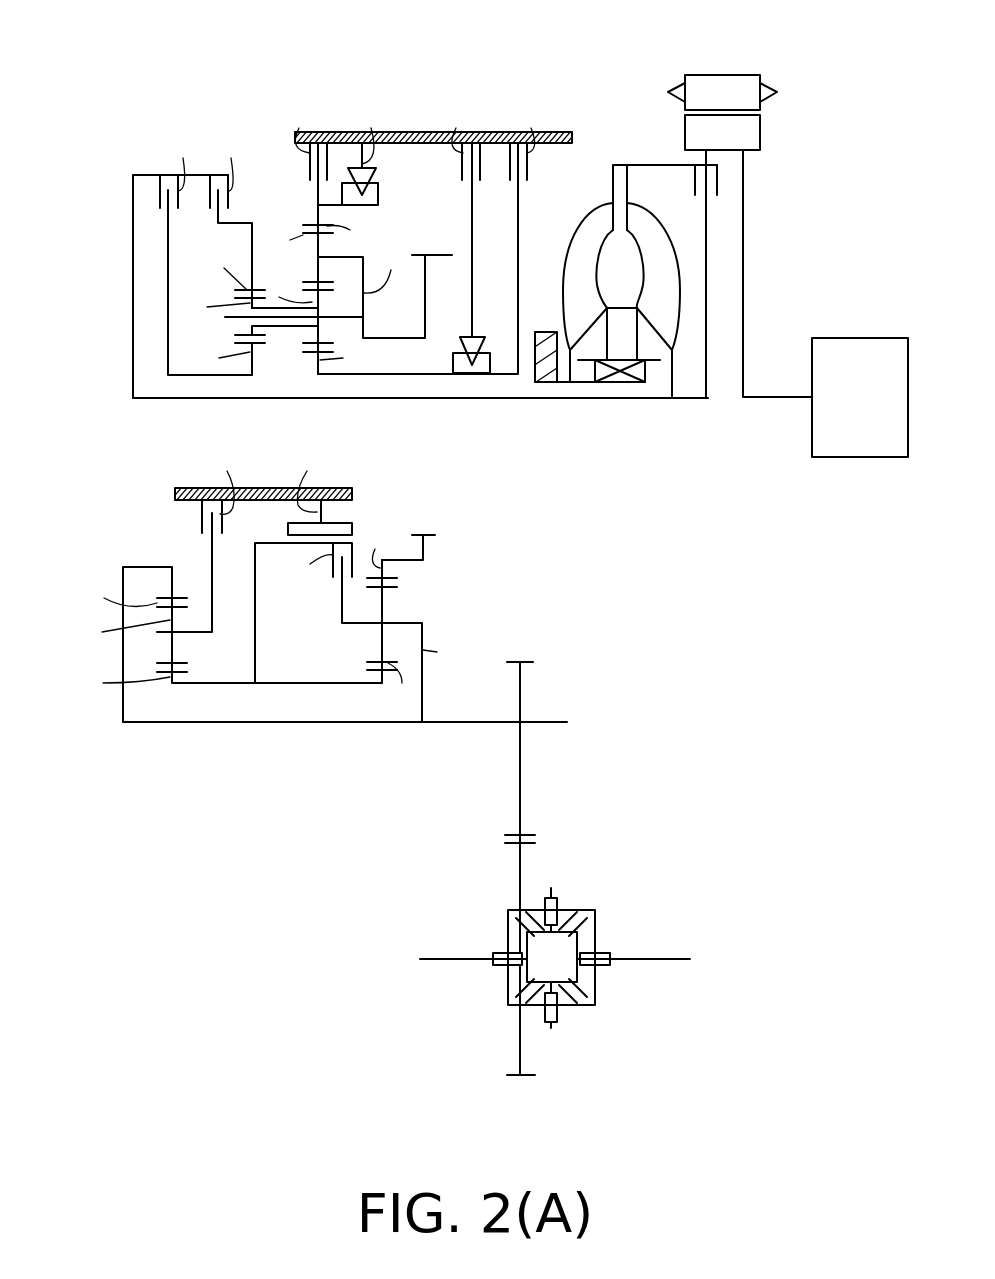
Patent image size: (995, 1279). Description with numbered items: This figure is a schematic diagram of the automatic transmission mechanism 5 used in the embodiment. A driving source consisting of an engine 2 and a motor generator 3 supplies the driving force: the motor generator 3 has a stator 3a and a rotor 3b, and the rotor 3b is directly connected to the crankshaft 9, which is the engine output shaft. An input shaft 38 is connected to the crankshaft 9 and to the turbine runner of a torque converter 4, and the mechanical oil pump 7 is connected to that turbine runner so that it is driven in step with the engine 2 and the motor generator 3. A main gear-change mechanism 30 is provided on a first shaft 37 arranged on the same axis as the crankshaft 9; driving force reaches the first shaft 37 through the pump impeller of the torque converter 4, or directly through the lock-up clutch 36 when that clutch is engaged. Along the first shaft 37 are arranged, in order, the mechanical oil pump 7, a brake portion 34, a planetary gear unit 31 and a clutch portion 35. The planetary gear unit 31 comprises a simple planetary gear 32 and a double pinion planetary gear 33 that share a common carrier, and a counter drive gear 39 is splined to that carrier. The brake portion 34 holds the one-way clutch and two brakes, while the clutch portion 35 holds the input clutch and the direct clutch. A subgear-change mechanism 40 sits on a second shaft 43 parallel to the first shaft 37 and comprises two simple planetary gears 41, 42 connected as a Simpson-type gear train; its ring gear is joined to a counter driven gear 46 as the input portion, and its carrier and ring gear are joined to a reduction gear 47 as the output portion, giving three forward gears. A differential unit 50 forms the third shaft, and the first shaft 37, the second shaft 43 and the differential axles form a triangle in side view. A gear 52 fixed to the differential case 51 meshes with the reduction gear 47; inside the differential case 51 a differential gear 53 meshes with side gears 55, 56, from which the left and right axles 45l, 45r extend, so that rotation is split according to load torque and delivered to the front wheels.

The engine 2 is at (863, 350).
The motor generator 3 is at (751, 73).
The stator 3a is at (758, 91).
The rotor 3b is at (749, 136).
The torque converter 4 is at (601, 188).
The automatic transmission mechanism 5 is at (393, 55).
The mechanical oil pump 7 is at (545, 330).
The crankshaft 9 is at (744, 228).
The main gear-change mechanism 30 is at (96, 267).
The planetary gear unit 31 is at (220, 110).
The simple planetary gear 32 is at (247, 221).
The double pinion planetary gear 33 is at (304, 206).
The brake portion 34 is at (495, 90).
The clutch portion 35 is at (137, 170).
The lock-up clutch 36 is at (697, 203).
The first shaft 37 is at (537, 400).
The input shaft 38 is at (642, 165).
The counter drive gear 39 is at (427, 278).
The subgear-change mechanism 40 is at (49, 607).
The simple planetary gear 41 is at (422, 581).
The simple planetary gear 42 is at (134, 565).
The second shaft 43 is at (305, 723).
The left axle 45l is at (440, 962).
The right axle 45r is at (660, 962).
The counter driven gear 46 is at (430, 535).
The reduction gear 47 is at (521, 688).
The differential unit 50 is at (628, 890).
The differential case 51 is at (588, 1007).
The gear 52 is at (521, 863).
The differential gear 53 is at (562, 987).
The side gear 55 is at (525, 947).
The side gear 56 is at (577, 947).